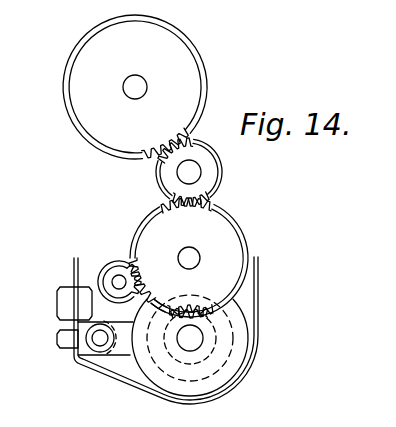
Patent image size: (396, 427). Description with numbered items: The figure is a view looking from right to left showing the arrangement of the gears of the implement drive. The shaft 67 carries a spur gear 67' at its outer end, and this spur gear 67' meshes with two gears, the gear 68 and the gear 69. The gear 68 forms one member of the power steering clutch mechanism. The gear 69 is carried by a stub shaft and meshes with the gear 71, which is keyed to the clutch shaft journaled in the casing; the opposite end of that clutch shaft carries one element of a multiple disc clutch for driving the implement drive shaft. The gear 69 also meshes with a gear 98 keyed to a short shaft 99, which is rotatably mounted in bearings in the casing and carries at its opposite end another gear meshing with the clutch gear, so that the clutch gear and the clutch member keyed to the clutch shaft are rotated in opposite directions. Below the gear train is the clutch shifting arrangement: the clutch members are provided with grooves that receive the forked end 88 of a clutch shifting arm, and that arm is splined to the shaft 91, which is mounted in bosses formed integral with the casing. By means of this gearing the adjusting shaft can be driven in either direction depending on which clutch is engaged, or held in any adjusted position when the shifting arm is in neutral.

The gear 68 is at (207, 90).
The shaft 67 is at (213, 168).
The spur gear 67' is at (240, 193).
The gear 69 is at (241, 227).
The gear 71 is at (210, 332).
The gear 98 is at (108, 272).
The short shaft 99 is at (119, 280).
The forked end 88 is at (118, 340).
The shaft 91 is at (100, 346).